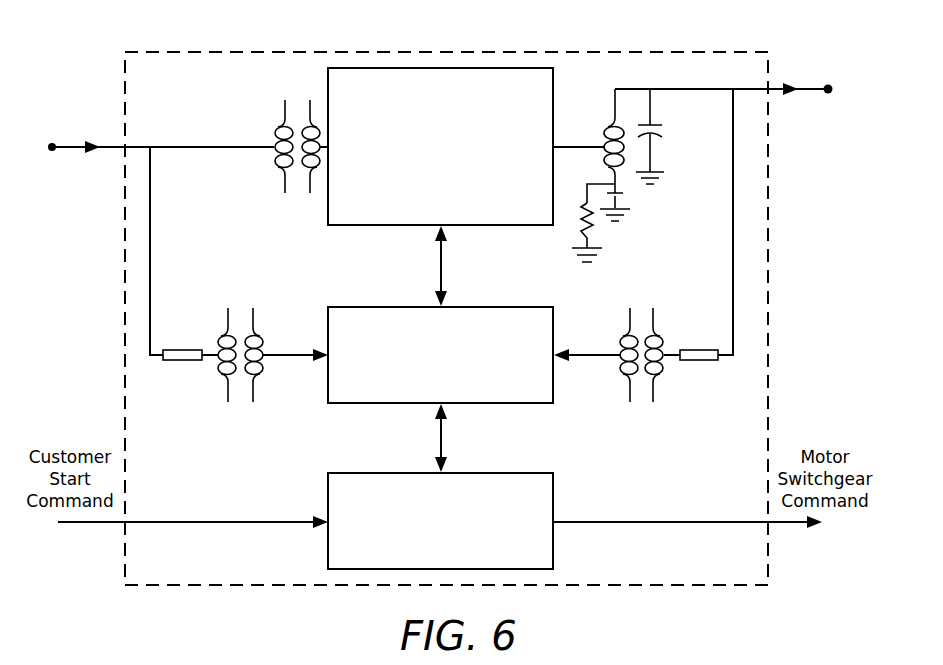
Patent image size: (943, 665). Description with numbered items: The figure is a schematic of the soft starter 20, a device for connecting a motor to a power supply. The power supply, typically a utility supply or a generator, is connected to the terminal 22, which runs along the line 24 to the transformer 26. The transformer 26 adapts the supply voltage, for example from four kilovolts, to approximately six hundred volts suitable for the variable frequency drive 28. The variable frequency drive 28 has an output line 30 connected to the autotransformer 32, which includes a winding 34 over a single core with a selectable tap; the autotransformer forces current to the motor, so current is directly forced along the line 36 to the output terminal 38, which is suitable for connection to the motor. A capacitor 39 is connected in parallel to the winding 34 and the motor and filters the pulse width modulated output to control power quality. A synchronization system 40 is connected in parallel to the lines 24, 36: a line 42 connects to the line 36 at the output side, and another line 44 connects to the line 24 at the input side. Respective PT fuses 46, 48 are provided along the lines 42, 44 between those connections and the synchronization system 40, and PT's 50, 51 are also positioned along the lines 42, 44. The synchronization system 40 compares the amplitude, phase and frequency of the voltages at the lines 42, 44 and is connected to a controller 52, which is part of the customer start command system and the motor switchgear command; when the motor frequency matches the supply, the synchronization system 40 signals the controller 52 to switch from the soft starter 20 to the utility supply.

The soft starter 20 is at (782, 44).
The terminal 22 is at (54, 144).
The line 24 is at (232, 145).
The transformer 26 is at (284, 178).
The variable frequency drive 28 is at (365, 227).
The output line 30 is at (572, 146).
The autotransformer 32 is at (706, 156).
The winding 34 is at (622, 172).
The line 36 is at (716, 87).
The output terminal 38 is at (832, 84).
The capacitor 39 is at (660, 128).
The synchronization system 40 is at (365, 404).
The line 42 is at (734, 249).
The line 44 is at (149, 230).
The PT fuse 46 is at (710, 361).
The PT fuse 48 is at (172, 361).
The PT 50 is at (653, 402).
The PT 51 is at (253, 402).
The controller 52 is at (548, 503).